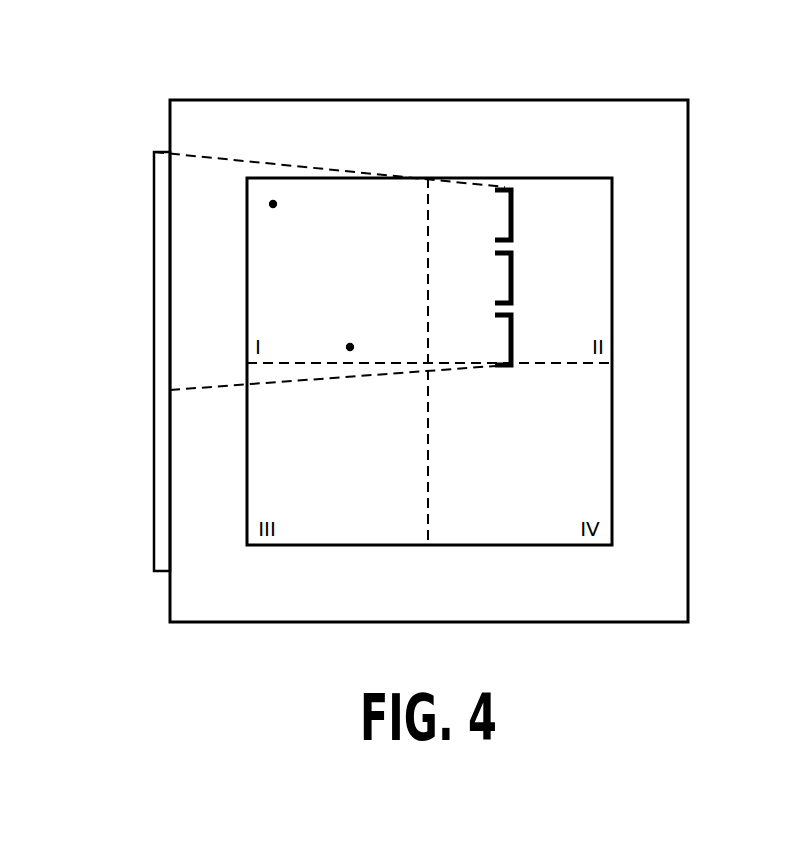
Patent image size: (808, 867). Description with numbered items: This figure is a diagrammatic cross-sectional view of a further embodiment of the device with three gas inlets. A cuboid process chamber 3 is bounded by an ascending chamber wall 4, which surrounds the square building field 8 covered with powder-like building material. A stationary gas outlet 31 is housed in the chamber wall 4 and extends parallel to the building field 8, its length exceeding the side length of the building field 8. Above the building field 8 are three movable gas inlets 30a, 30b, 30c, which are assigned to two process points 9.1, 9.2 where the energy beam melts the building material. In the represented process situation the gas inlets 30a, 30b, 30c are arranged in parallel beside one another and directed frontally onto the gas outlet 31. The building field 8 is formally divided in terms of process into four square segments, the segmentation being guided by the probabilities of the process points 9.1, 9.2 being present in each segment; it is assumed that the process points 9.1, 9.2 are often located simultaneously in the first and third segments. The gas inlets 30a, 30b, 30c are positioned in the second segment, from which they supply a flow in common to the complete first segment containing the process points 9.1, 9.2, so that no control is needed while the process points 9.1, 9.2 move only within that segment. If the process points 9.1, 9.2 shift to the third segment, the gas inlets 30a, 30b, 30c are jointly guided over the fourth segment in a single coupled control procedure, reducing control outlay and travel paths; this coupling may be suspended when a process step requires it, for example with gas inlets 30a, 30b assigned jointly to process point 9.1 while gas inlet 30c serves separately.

The process chamber 3 is at (625, 153).
The chamber wall 4 is at (641, 100).
The building field 8 is at (571, 195).
The process point 9.1 is at (273, 200).
The process point 9.2 is at (350, 343).
The gas inlet 30a is at (513, 222).
The gas inlet 30b is at (513, 278).
The gas inlet 30c is at (513, 340).
The gas outlet 31 is at (165, 152).